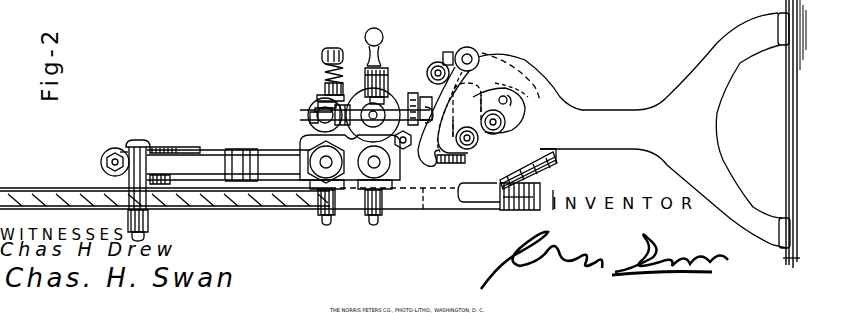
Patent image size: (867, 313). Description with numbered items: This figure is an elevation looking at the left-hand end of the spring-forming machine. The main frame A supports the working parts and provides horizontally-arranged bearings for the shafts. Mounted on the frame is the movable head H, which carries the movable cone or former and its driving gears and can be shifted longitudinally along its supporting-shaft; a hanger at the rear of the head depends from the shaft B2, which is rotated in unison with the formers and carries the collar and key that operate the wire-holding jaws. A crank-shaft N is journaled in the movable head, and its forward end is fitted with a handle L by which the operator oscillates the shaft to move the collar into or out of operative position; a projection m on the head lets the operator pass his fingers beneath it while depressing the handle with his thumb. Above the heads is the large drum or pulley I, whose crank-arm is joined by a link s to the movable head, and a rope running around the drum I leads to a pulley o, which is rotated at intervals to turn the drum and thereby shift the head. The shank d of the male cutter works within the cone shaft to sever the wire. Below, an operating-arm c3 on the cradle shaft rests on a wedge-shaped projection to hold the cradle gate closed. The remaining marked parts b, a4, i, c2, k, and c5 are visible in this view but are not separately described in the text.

The rail b is at (63, 192).
The drum or pulley I is at (192, 190).
The main frame A is at (214, 151).
The movable head H is at (391, 84).
The projection m is at (364, 31).
The crank-shaft N is at (328, 76).
The handle L is at (333, 48).
The shaft B2 is at (310, 120).
The shaft a4 is at (318, 122).
The link s is at (313, 102).
The pulley o is at (333, 102).
The clamp i is at (415, 93).
The lever c2 is at (437, 163).
The shank d is at (466, 47).
The pin k is at (472, 140).
The operating-arm c3 is at (427, 165).
The plate c5 is at (560, 167).